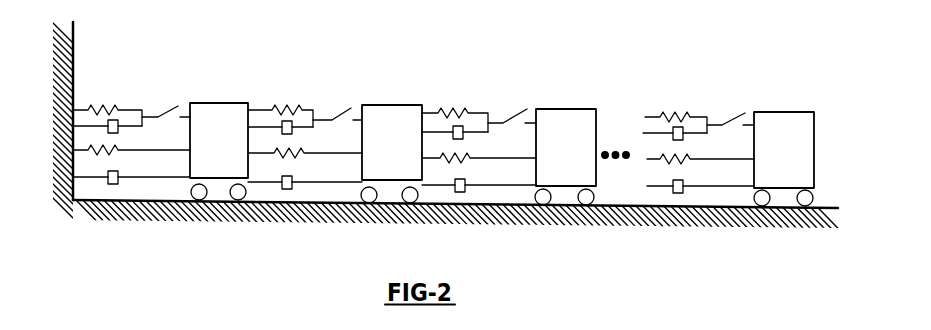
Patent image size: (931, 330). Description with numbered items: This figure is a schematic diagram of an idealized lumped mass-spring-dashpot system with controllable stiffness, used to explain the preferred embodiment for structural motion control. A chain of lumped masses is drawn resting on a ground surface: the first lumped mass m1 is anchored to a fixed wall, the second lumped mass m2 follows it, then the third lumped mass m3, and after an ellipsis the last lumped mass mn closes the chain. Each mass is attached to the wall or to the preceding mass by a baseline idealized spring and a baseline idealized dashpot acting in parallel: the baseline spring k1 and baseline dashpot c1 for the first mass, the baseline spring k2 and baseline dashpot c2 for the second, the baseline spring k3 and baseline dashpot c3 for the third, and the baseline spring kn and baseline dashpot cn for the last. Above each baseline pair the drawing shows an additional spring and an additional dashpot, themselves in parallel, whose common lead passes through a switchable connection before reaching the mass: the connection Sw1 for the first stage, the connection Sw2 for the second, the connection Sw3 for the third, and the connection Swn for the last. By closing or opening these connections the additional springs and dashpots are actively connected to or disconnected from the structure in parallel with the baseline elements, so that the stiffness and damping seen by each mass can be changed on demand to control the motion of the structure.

The lumped mass m1 is at (219, 151).
The baseline spring k1 is at (131, 160).
The baseline dashpot c1 is at (131, 185).
The connection Sw1 is at (166, 99).
The lumped mass m2 is at (391, 154).
The baseline spring k2 is at (305, 162).
The baseline dashpot c2 is at (305, 189).
The connection Sw2 is at (337, 102).
The lumped mass m3 is at (565, 157).
The baseline spring k3 is at (479, 167).
The baseline dashpot c3 is at (479, 193).
The connection Sw3 is at (512, 106).
The lumped mass mn is at (784, 159).
The baseline spring kn is at (700, 169).
The baseline dashpot cn is at (700, 194).
The connection Swn is at (730, 109).